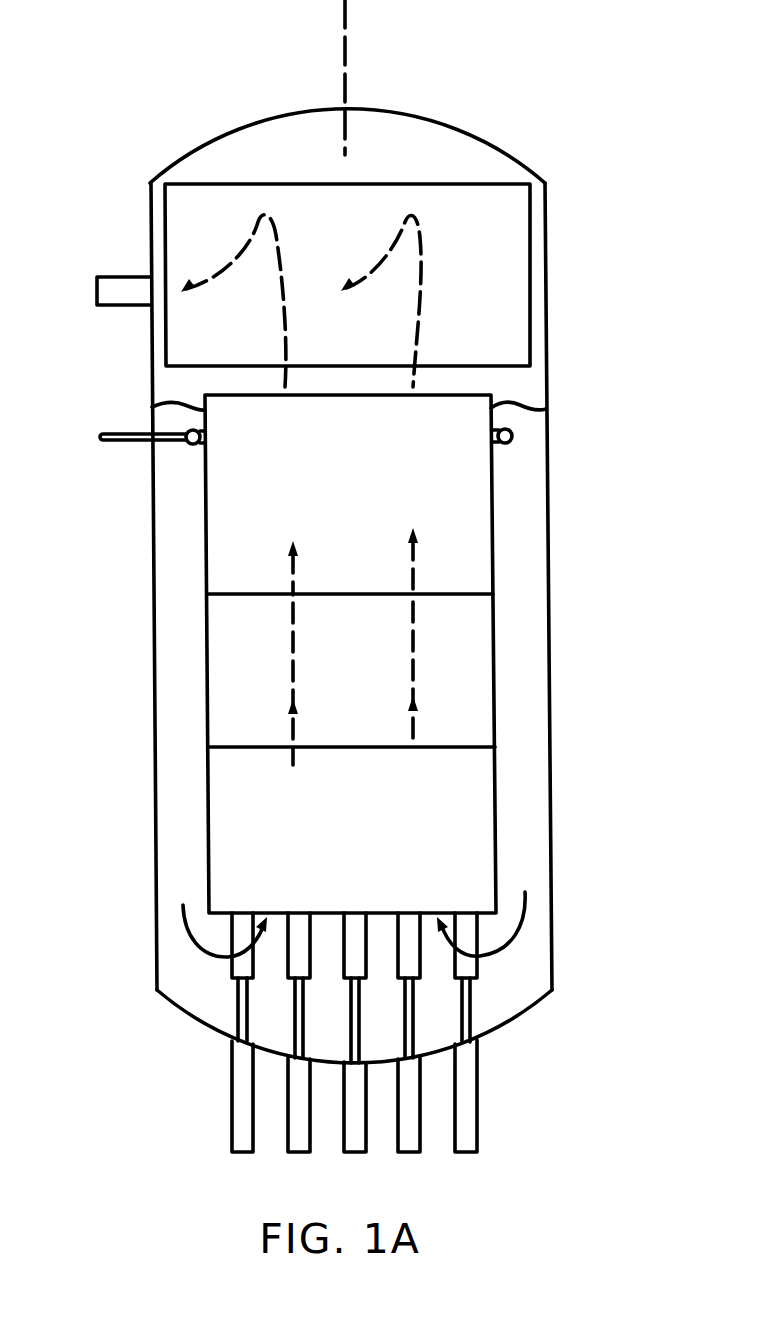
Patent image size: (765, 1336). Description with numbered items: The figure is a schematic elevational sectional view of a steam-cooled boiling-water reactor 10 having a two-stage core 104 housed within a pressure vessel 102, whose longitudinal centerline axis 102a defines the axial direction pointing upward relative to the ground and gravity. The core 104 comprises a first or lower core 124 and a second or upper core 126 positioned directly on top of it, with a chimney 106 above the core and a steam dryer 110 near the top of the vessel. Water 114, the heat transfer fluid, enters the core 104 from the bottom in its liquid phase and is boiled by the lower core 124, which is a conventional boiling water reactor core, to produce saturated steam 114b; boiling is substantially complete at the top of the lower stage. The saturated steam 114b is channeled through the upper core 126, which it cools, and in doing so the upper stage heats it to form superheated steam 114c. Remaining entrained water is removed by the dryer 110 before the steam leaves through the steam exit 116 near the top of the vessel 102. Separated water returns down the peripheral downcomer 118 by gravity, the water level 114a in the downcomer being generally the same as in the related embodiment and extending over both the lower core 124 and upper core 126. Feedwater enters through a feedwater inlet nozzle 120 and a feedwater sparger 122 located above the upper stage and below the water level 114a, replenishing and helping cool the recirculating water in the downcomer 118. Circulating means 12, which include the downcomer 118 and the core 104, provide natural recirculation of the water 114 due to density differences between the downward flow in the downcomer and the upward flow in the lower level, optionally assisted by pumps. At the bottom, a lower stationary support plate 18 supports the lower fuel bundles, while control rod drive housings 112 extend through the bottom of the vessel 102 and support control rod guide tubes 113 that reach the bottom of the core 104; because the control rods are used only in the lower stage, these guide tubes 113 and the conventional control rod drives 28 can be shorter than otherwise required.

The steam-cooled boiling-water reactor 10 is at (197, 146).
The circulating means 12 is at (111, 946).
The lower stationary support plate 18 is at (444, 906).
The control rod drives 28 is at (478, 1115).
The pressure vessel 102 is at (548, 618).
The longitudinal centerline axis 102a is at (346, 100).
The core 104 is at (245, 584).
The chimney 106 is at (493, 566).
The steam dryer 110 is at (546, 281).
The control rod drive housings 112 is at (470, 1007).
The control rod guide tubes 113 is at (476, 963).
The water 114 is at (527, 918).
The water level 114a is at (521, 404).
The saturated steam 114b is at (298, 725).
The superheated steam 114c is at (299, 576).
The steam exit 116 is at (116, 276).
The downcomer 118 is at (174, 858).
The feedwater inlet nozzle 120 is at (113, 432).
The feedwater sparger 122 is at (512, 435).
The lower core 124 is at (208, 828).
The upper core 126 is at (207, 659).